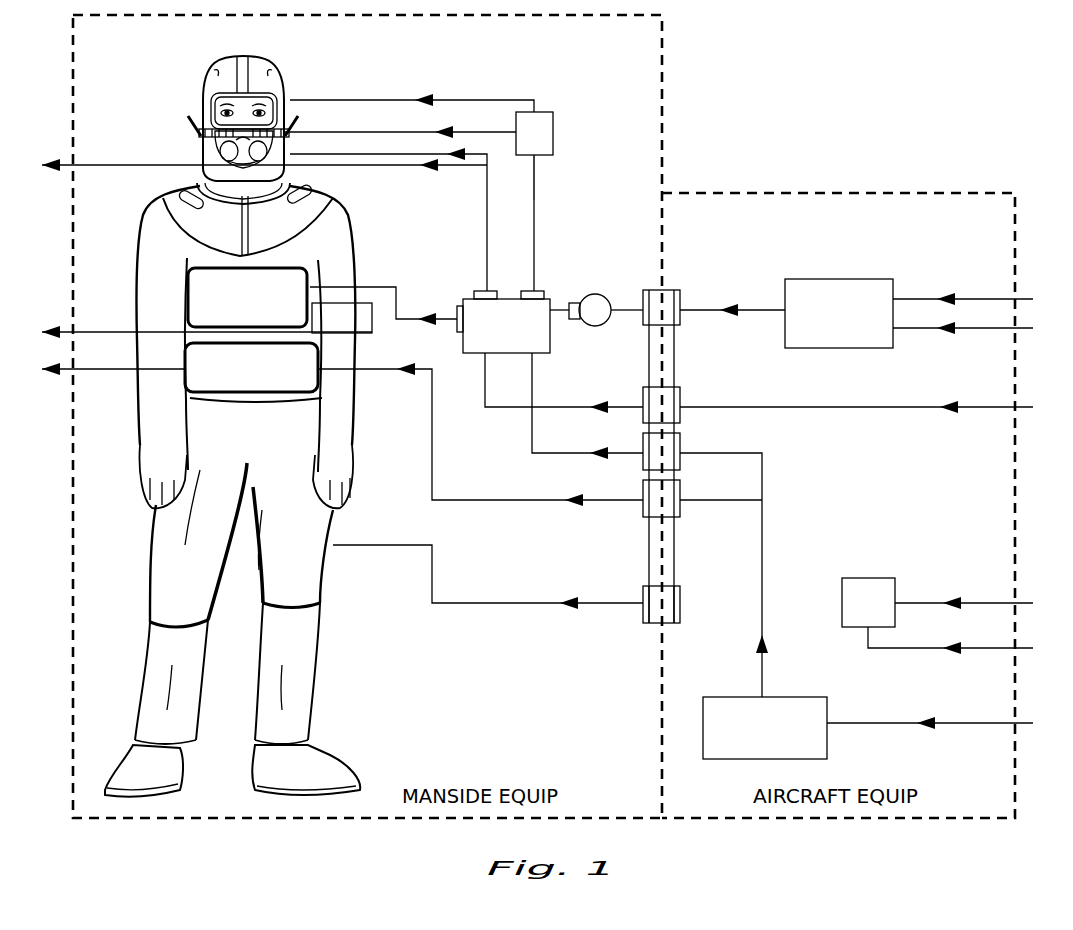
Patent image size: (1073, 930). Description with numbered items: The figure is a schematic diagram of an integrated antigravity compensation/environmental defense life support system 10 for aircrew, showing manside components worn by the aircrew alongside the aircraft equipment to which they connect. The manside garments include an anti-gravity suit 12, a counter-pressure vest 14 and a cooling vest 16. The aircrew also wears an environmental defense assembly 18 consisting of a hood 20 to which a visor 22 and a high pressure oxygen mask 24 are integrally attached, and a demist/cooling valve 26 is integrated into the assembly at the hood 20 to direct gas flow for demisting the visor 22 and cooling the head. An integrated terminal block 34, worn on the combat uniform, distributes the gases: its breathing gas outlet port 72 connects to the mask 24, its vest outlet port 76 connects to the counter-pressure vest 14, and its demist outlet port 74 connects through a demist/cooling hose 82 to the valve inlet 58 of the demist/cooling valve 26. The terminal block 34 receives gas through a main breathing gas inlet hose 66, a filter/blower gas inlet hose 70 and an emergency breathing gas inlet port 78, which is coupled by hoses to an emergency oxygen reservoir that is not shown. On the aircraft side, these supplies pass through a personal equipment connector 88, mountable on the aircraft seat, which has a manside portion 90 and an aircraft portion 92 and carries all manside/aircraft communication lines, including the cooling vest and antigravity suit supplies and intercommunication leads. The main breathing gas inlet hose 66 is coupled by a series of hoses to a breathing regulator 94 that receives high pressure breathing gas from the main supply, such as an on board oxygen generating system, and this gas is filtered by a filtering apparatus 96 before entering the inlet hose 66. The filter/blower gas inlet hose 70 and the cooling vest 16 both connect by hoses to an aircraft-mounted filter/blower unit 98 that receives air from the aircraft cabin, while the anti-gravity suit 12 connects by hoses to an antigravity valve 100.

The integrated antigravity compensation/environmental defense life support system 10 is at (70, 129).
The anti-gravity suit 12 is at (296, 470).
The counter-pressure vest 14 is at (260, 314).
The cooling vest 16 is at (276, 389).
The environmental defense assembly 18 is at (232, 105).
The hood 20 is at (258, 58).
The visor 22 is at (268, 95).
The high pressure oxygen mask 24 is at (212, 156).
The demist/cooling valve 26 is at (553, 120).
The integrated terminal block 34 is at (513, 340).
The valve inlet 58 is at (540, 158).
The inlet hose 66 is at (553, 316).
The inlet hose 70 is at (537, 355).
The breathing gas outlet port 72 is at (472, 293).
The demist outlet port 74 is at (545, 293).
The vest outlet port 76 is at (458, 330).
The emergency breathing gas inlet port 78 is at (483, 356).
The demist/cooling hose 82 is at (536, 200).
The personal equipment connector 88 is at (665, 290).
The manside portion 90 is at (646, 625).
The aircraft portion 92 is at (681, 600).
The breathing regulator 94 is at (849, 332).
The filtering apparatus 96 is at (602, 322).
The filter/blower unit 98 is at (776, 744).
The antigravity valve 100 is at (876, 617).